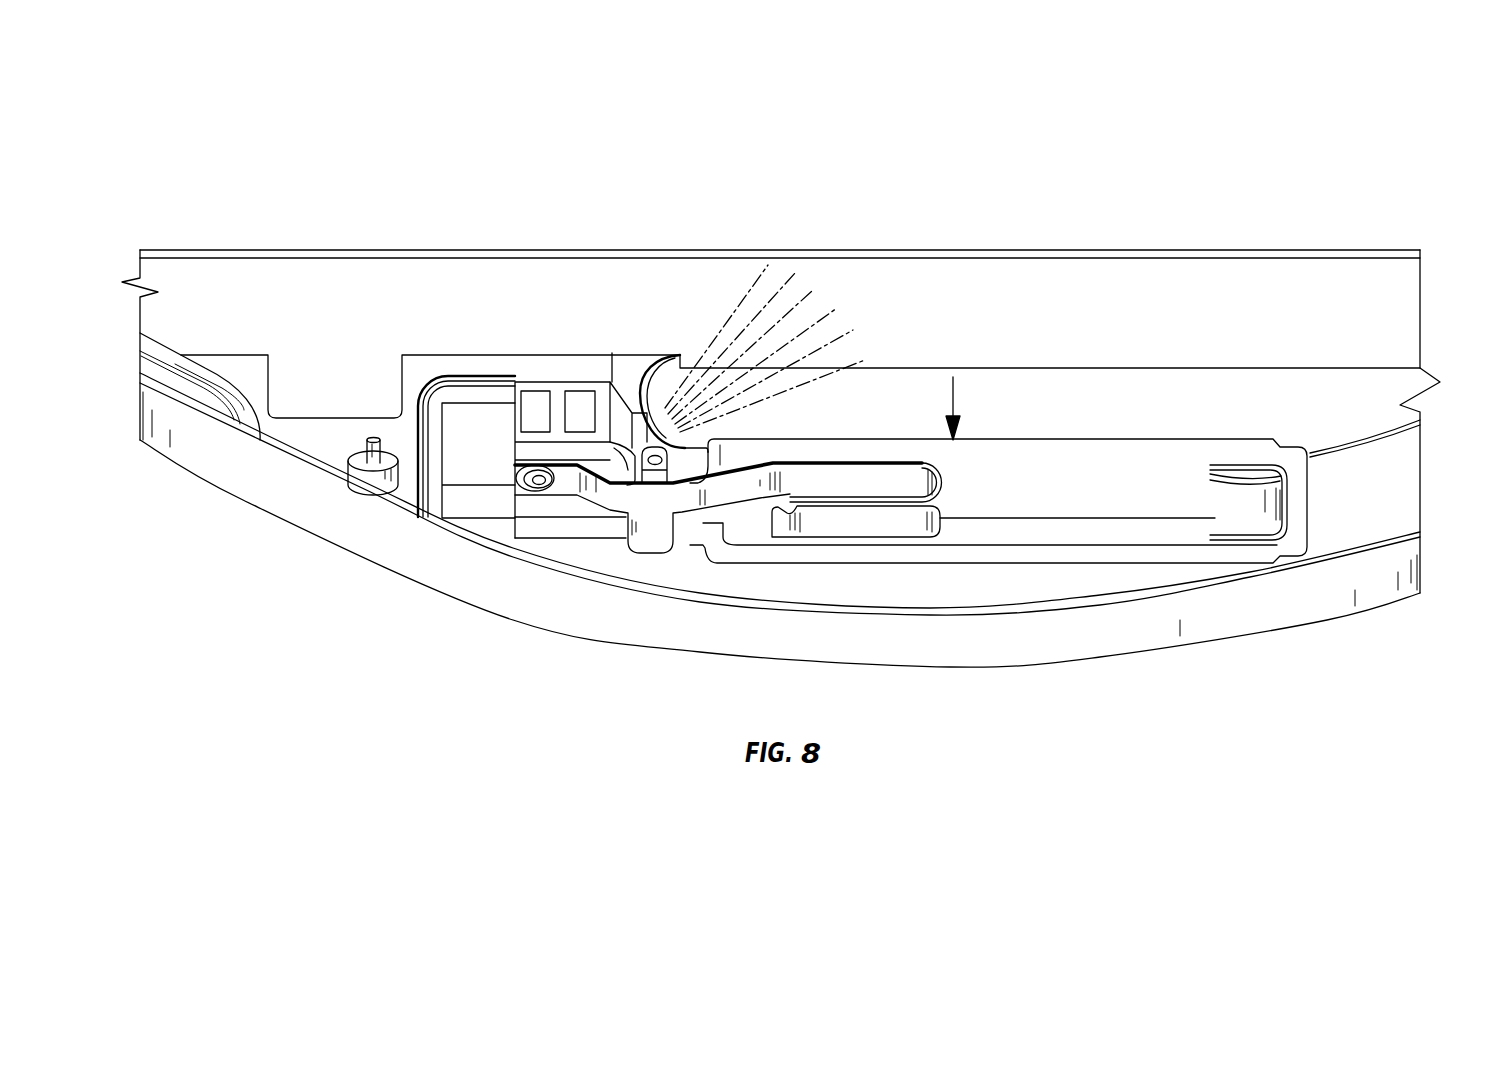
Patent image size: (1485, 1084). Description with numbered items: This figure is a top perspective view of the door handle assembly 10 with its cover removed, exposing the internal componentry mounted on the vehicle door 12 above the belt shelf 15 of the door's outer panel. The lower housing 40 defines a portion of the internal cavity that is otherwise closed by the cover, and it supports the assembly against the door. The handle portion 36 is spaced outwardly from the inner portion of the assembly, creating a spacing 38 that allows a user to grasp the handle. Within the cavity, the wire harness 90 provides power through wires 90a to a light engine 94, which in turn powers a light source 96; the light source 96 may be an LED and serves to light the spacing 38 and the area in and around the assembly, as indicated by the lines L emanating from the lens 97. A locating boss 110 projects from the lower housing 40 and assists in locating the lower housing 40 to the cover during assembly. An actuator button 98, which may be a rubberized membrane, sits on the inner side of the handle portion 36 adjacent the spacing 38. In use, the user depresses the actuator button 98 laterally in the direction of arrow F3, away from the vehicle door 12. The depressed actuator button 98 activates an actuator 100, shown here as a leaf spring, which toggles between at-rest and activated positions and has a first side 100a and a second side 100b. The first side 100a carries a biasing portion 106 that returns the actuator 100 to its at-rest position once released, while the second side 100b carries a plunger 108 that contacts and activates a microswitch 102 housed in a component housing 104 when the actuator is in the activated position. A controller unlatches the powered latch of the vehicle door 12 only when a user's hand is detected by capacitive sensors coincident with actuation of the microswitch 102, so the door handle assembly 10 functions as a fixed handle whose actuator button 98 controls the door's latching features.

The door handle assembly 10 is at (927, 240).
The vehicle door 12 is at (1318, 250).
The belt shelf 15 is at (1353, 267).
The handle portion 36 is at (1185, 640).
The spacing 38 is at (1172, 407).
The lower housing 40 is at (357, 579).
The wire harness 90 is at (178, 357).
The wires 90a is at (437, 383).
The light engine 94 is at (480, 413).
The light source 96 is at (577, 402).
The lens 97 is at (658, 400).
The actuator button 98 is at (1083, 445).
The actuator 100 is at (655, 537).
The first side 100a is at (943, 523).
The second side 100b is at (563, 482).
The microswitch 102 is at (534, 402).
The component housing 104 is at (609, 380).
The biasing portion 106 is at (843, 527).
The plunger 108 is at (540, 490).
The locating boss 110 is at (340, 477).
The lines L is at (751, 290).
The arrow F3 is at (953, 408).